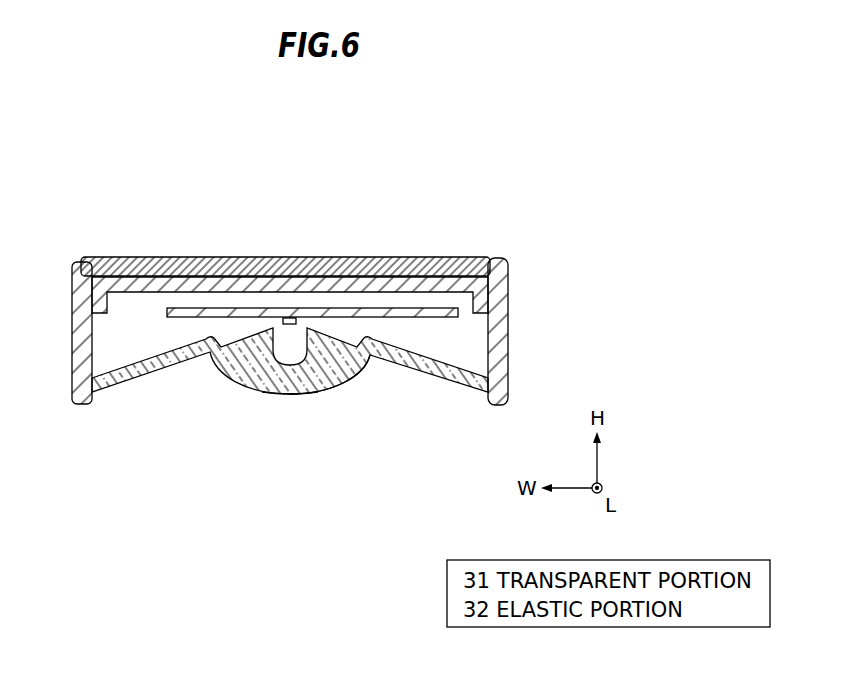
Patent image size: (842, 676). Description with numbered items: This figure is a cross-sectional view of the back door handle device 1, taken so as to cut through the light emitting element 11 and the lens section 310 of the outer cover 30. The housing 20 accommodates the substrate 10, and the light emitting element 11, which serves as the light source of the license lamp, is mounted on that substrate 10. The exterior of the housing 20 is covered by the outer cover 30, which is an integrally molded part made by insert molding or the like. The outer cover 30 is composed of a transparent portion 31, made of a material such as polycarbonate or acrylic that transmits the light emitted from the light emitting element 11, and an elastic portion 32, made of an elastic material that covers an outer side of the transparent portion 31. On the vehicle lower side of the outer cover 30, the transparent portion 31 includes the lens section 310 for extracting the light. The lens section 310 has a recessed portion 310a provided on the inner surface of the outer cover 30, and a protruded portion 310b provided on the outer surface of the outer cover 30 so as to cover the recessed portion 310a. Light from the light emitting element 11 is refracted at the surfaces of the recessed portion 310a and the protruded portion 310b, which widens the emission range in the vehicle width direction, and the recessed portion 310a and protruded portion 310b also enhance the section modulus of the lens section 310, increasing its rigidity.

The back door handle device 1 is at (459, 152).
The substrate 10 is at (458, 314).
The light emitting element 11 is at (291, 318).
The housing 20 is at (454, 280).
The outer cover 30 is at (197, 172).
The transparent portion 31 is at (78, 258).
The elastic portion 32 is at (148, 267).
The lens section 310 is at (248, 373).
The recessed portion 310a is at (320, 391).
The protruded portion 310b is at (287, 394).